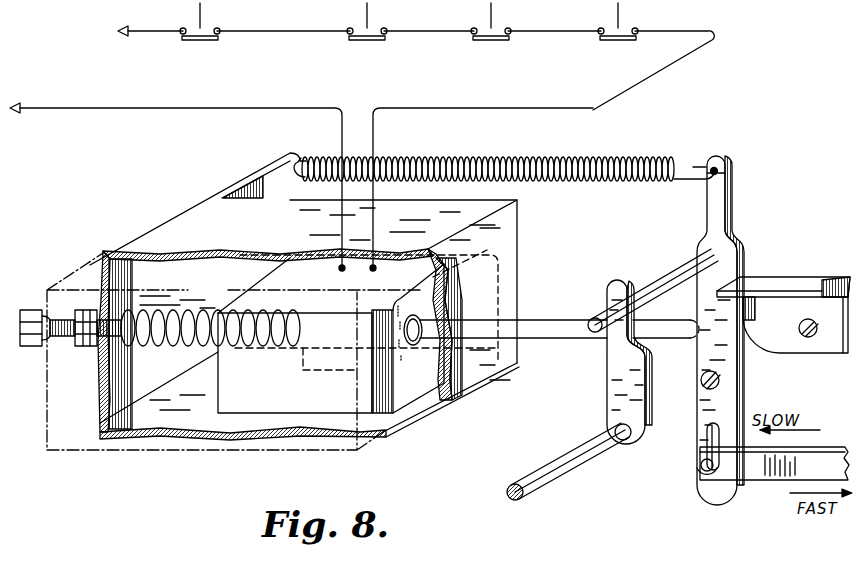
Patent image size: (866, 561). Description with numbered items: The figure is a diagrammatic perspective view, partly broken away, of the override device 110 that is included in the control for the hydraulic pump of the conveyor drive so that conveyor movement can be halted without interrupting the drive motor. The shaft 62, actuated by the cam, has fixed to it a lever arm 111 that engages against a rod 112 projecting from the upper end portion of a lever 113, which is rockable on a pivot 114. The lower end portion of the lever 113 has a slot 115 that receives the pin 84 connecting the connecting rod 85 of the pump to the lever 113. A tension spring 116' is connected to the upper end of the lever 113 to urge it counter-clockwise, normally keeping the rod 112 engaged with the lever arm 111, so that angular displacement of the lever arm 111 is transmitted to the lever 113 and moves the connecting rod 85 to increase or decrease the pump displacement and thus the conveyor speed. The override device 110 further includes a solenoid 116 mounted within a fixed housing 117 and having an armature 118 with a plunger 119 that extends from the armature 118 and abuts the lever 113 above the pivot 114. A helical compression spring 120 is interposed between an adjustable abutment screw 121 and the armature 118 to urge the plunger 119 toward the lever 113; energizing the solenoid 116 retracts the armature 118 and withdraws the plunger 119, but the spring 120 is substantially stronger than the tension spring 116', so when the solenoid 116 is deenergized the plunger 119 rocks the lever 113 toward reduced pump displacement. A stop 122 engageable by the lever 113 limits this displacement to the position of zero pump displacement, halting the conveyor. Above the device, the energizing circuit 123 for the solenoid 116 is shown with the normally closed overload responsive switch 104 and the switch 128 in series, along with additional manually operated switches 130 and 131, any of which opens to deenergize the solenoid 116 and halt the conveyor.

The switch 131 is at (184, 41).
The switch 130 is at (351, 41).
The switch 128 is at (475, 41).
The overload responsive switch 104 is at (602, 41).
The energizing circuit 123 is at (229, 108).
The tension spring 116' is at (484, 148).
The override device 110 is at (684, 153).
The fixed housing 117 is at (512, 213).
The solenoid 116 is at (404, 307).
The armature 118 is at (427, 313).
The plunger 119 is at (557, 310).
The helical compression spring 120 is at (177, 308).
The adjustable abutment screw 121 is at (57, 347).
The rod 112 is at (650, 286).
The stop 122 is at (783, 280).
The lever arm 111 is at (606, 373).
The lever 113 is at (733, 357).
The pivot 114 is at (698, 383).
The slot 115 is at (706, 438).
The pin 84 is at (698, 470).
The connecting rod 85 is at (762, 482).
The shaft 62 is at (553, 457).